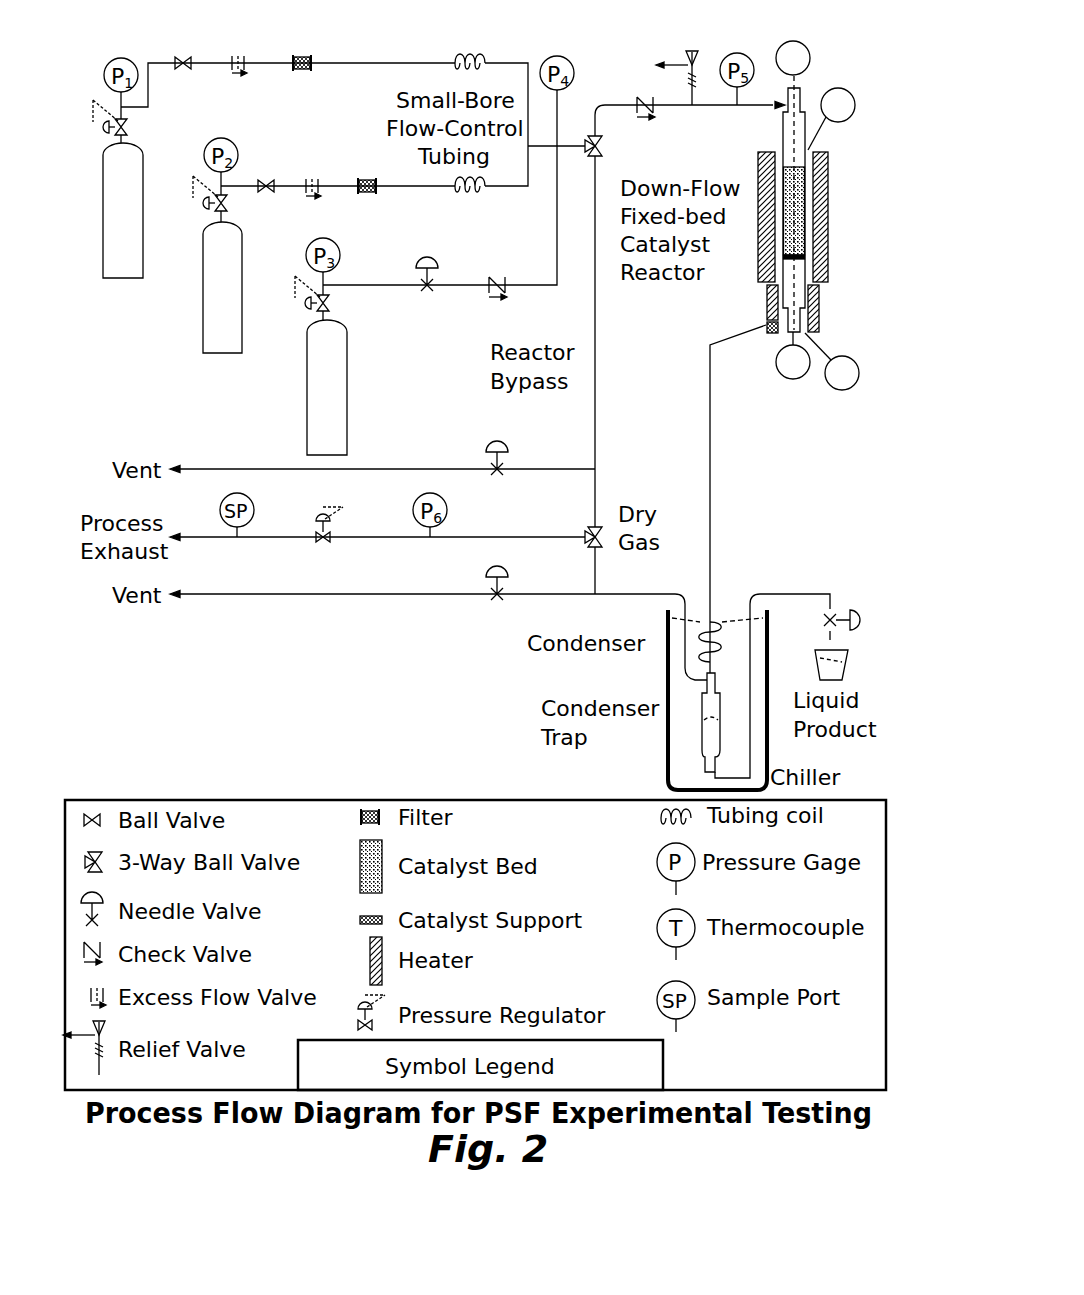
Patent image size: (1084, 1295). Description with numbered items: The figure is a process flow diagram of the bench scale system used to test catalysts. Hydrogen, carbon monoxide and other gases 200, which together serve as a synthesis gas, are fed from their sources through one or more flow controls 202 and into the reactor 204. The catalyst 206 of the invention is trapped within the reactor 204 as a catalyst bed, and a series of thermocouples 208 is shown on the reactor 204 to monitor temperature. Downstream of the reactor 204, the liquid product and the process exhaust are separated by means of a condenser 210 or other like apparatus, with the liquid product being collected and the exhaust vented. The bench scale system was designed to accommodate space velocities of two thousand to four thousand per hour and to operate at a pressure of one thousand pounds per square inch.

The gases 200 is at (120, 255).
The flow controls 202 is at (592, 134).
The reactor 204 is at (833, 204).
The catalyst 206 is at (806, 232).
The thermocouples 208 is at (855, 99).
The condenser 210 is at (778, 750).